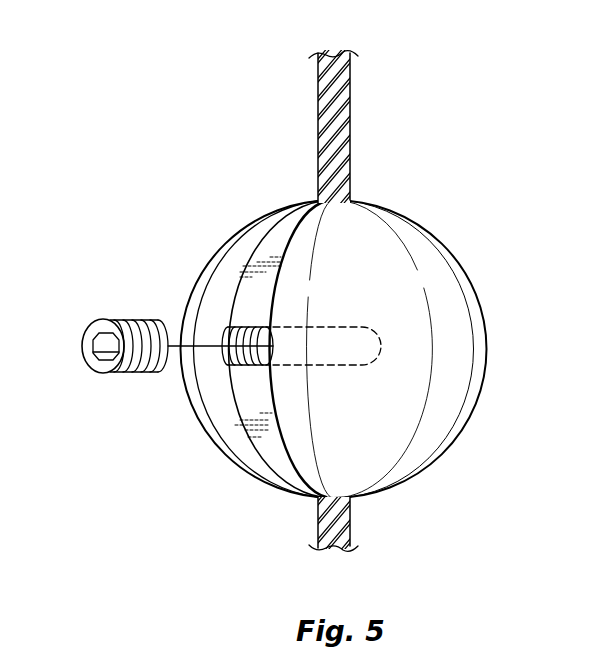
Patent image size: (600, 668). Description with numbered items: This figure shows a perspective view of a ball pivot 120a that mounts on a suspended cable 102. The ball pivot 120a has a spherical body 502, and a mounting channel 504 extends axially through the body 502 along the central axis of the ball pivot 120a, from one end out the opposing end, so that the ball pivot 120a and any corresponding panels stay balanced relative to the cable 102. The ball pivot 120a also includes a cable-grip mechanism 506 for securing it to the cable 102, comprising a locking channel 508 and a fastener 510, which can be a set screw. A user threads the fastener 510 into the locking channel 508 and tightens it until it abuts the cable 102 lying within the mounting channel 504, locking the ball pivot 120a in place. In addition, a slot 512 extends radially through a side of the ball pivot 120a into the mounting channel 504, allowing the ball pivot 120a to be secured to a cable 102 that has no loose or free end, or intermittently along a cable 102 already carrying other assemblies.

The cable 102 is at (353, 94).
The ball pivot 120a is at (441, 199).
The spherical body 502 is at (477, 337).
The mounting channel 504 is at (364, 504).
The fastener assembly 506 is at (108, 481).
The locking channel 508 is at (212, 367).
The fastener 510 is at (121, 374).
The slot 512 is at (275, 237).